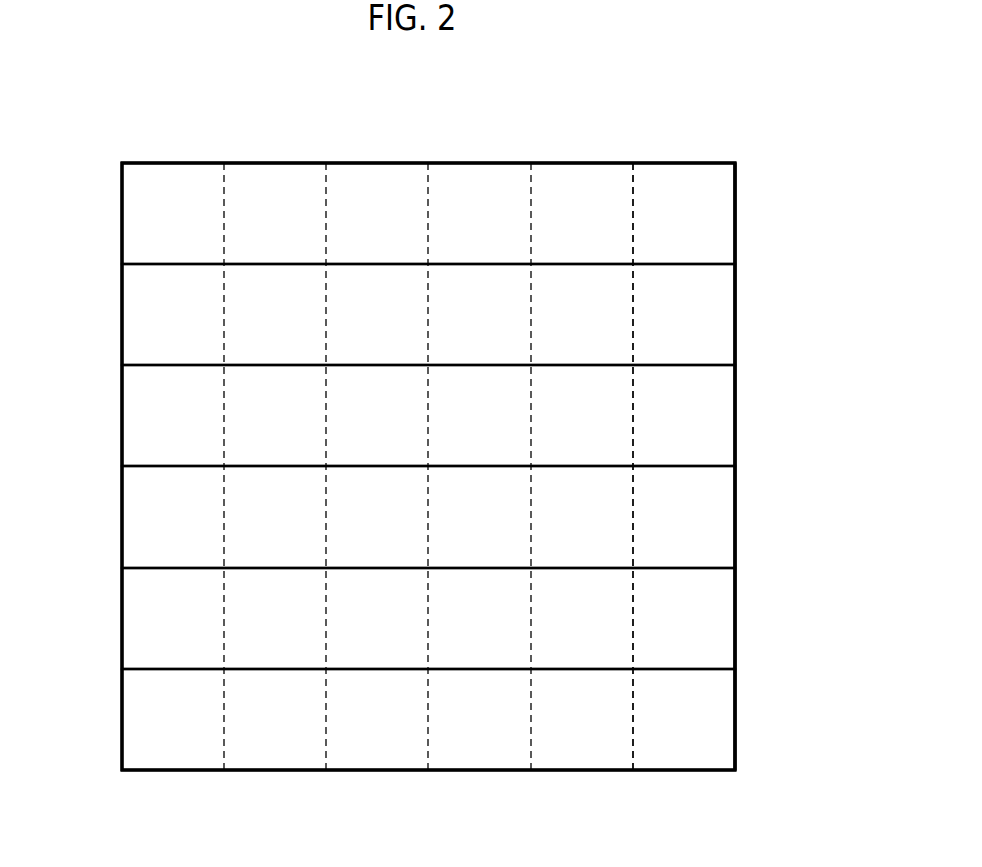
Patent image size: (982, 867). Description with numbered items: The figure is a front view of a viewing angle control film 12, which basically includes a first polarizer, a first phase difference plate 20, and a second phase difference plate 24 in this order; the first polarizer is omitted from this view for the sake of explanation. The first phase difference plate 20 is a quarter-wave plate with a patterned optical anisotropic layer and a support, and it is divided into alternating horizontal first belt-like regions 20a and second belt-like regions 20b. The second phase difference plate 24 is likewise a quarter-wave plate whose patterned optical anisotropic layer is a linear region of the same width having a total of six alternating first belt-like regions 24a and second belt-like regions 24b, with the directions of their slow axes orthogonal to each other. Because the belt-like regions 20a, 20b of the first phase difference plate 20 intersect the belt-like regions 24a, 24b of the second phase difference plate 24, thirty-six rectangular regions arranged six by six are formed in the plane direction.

The viewing angle control film 12 is at (657, 131).
The first phase difference plate 20 is at (466, 181).
The first belt-like regions 20a is at (136, 345).
The second belt-like regions 20b is at (136, 244).
The second phase difference plate 24 is at (720, 557).
The first belt-like regions 24a is at (198, 755).
The second belt-like regions 24b is at (300, 755).